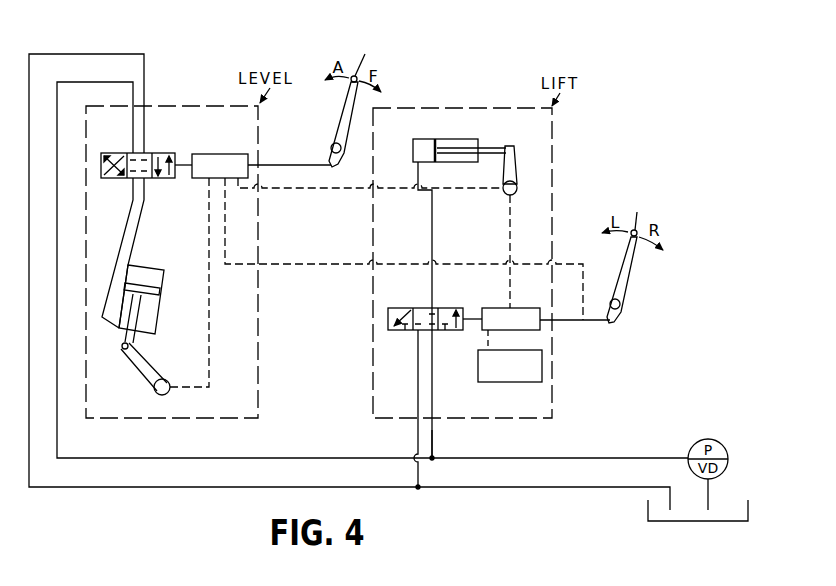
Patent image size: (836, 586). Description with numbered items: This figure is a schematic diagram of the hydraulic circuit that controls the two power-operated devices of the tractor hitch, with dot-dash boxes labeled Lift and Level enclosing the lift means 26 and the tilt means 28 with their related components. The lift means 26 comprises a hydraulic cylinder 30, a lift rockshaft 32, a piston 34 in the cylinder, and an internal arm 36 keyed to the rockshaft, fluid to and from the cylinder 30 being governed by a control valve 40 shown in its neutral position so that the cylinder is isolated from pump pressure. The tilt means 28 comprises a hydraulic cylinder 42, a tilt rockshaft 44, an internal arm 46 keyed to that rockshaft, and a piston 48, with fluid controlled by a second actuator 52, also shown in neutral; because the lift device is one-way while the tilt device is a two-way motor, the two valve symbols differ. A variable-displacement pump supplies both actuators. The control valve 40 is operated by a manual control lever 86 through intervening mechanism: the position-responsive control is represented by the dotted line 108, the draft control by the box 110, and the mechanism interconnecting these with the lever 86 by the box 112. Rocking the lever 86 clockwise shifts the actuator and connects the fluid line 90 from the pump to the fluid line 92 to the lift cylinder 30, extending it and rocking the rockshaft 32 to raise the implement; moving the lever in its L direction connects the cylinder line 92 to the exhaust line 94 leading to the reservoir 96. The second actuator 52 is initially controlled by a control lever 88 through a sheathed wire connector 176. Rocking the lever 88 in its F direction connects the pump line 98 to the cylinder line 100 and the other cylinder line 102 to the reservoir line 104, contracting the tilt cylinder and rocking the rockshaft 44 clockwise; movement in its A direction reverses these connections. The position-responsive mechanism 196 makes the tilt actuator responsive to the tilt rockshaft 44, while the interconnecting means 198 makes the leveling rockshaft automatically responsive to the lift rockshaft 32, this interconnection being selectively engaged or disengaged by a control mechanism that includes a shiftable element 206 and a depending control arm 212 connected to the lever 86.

The lift means 26 is at (480, 144).
The tilt means 28 is at (151, 326).
The hydraulic cylinder 30 is at (414, 147).
The lift rockshaft 32 is at (505, 191).
The piston 34 is at (435, 142).
The internal arm 36 is at (514, 172).
The control valve 40 is at (435, 304).
The hydraulic cylinder 42 is at (157, 277).
The tilt rockshaft 44 is at (163, 395).
The internal arm 46 is at (145, 370).
The piston 48 is at (153, 297).
The second actuator 52 is at (163, 151).
The control lever 86 is at (627, 258).
The control lever 88 is at (350, 101).
The fluid line 90 is at (432, 442).
The fluid line 92 is at (433, 293).
The exhaust line 94 is at (417, 393).
The reservoir 96 is at (718, 523).
The pump line 98 is at (115, 82).
The cylinder line 100 is at (130, 213).
The cylinder line 102 is at (140, 223).
The reservoir line 104 is at (145, 92).
The dotted line 108 is at (507, 233).
The box 110 is at (497, 385).
The box 112 is at (519, 313).
The sheathed wire connector 176 is at (278, 162).
The position-responsive mechanism 196 is at (210, 389).
The interconnecting means 198 is at (225, 152).
The shiftable element 206 is at (337, 190).
The control arm 212 is at (350, 266).